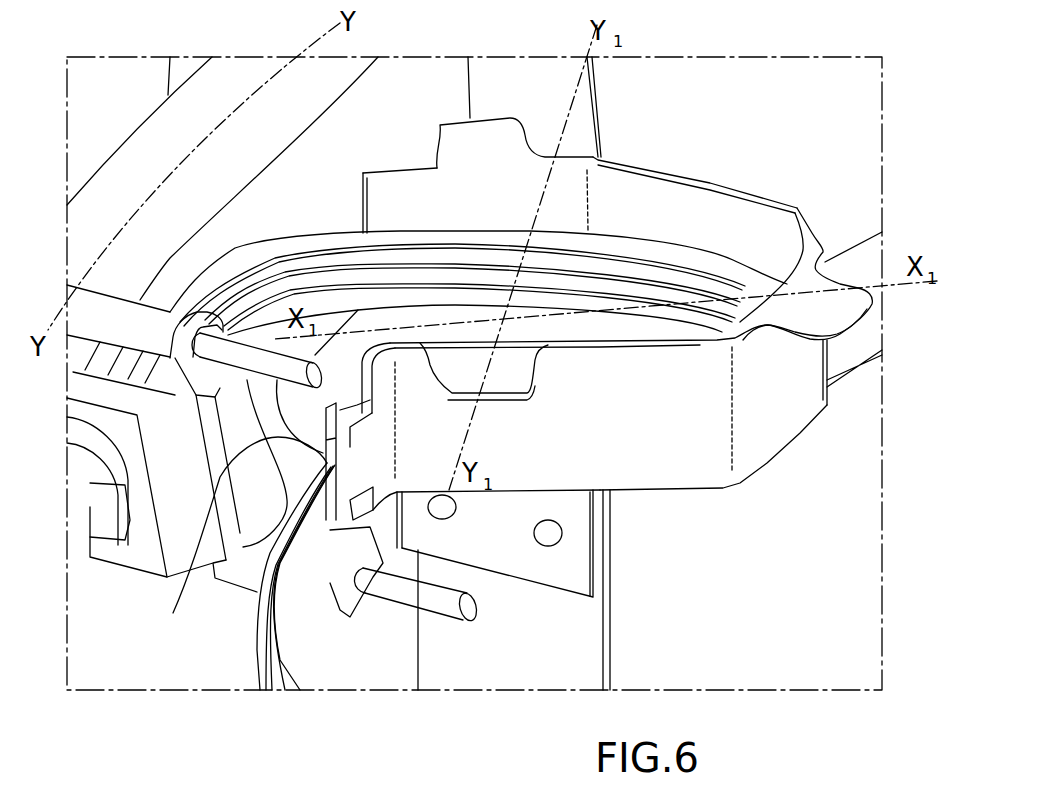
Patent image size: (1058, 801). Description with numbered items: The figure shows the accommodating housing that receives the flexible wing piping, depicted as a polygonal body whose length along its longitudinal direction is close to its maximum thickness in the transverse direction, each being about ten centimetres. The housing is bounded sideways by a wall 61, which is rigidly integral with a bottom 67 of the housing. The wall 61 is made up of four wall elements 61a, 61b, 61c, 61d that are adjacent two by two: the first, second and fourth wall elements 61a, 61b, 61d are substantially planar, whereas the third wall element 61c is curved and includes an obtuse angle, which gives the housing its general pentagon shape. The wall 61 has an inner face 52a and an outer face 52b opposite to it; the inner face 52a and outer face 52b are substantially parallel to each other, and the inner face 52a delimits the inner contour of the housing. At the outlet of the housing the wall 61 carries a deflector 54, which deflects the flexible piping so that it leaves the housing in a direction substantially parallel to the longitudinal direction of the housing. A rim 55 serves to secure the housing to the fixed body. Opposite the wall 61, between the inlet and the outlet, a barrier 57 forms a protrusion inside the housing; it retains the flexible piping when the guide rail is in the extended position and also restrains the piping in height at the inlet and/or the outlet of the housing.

The wall 61 is at (651, 253).
The first wall element 61a is at (388, 167).
The second wall element 61b is at (723, 183).
The third wall element 61c is at (773, 383).
The fourth wall element 61d is at (477, 343).
The bottom 67 is at (570, 327).
The inner face 52a is at (527, 200).
The outer face 52b is at (677, 448).
The deflector 54 is at (343, 583).
The rim 55 is at (545, 647).
The barrier 57 is at (178, 605).